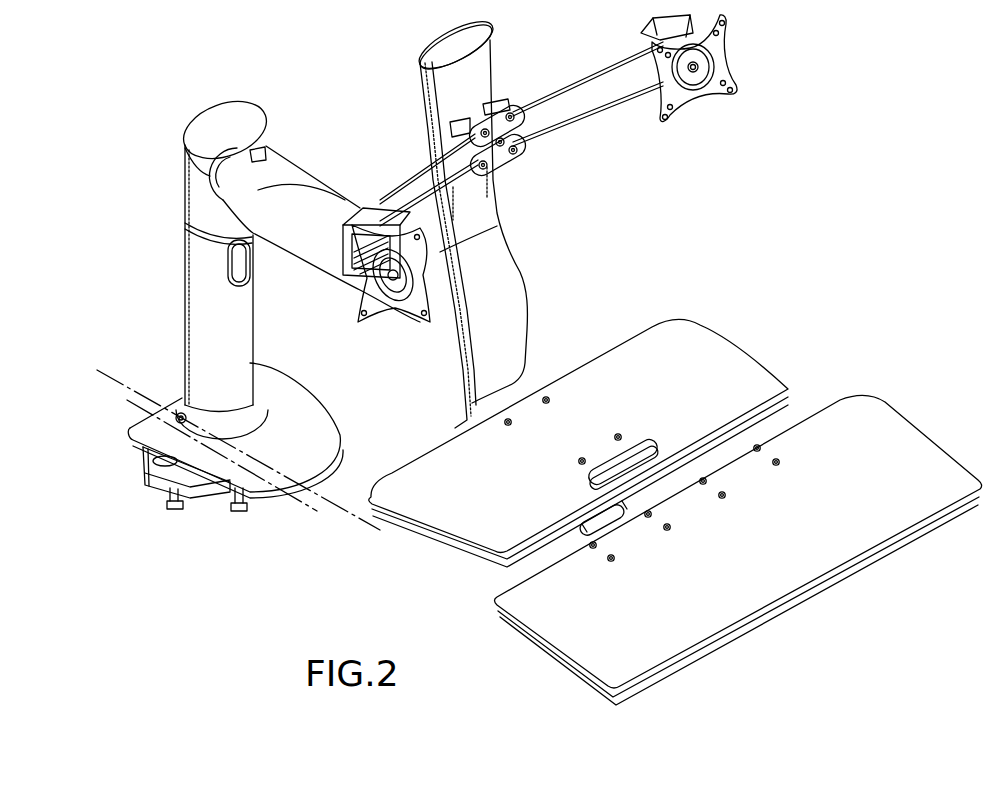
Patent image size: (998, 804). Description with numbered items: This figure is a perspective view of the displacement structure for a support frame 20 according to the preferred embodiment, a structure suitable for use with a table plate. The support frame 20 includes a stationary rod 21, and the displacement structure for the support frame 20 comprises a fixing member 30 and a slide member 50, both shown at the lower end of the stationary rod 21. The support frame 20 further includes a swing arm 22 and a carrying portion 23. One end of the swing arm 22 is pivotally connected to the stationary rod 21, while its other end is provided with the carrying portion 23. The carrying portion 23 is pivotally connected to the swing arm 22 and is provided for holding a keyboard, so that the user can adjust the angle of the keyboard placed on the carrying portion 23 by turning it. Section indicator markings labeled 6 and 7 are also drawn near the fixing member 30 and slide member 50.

The support frame 20 is at (281, 94).
The stationary rod 21 is at (192, 255).
The swing arm 22 is at (320, 197).
The carrying portion 23 is at (864, 409).
The fixing member 30 is at (195, 490).
The slide member 50 is at (298, 412).
The section line 6- 6 is at (71, 386).
The section line 7- 7 is at (101, 417).